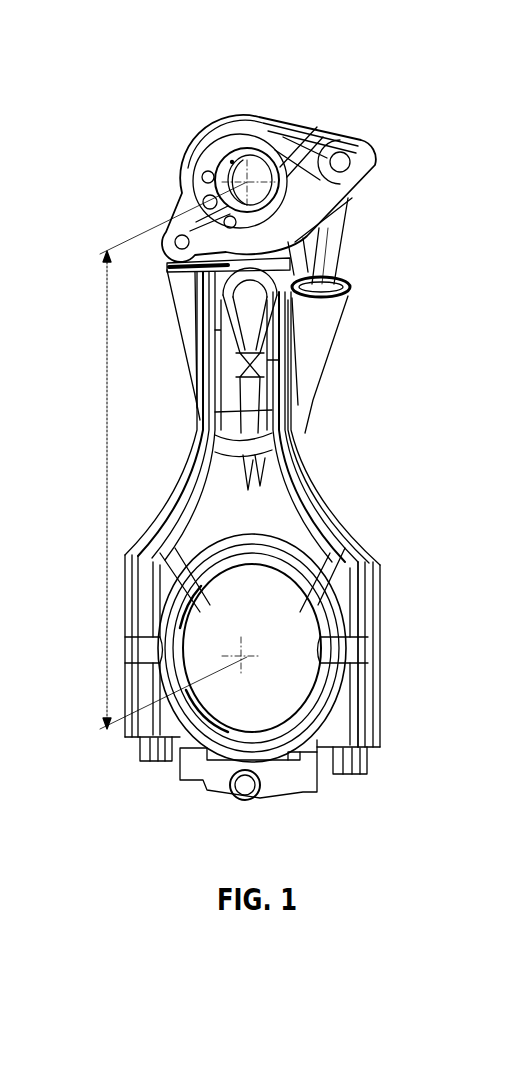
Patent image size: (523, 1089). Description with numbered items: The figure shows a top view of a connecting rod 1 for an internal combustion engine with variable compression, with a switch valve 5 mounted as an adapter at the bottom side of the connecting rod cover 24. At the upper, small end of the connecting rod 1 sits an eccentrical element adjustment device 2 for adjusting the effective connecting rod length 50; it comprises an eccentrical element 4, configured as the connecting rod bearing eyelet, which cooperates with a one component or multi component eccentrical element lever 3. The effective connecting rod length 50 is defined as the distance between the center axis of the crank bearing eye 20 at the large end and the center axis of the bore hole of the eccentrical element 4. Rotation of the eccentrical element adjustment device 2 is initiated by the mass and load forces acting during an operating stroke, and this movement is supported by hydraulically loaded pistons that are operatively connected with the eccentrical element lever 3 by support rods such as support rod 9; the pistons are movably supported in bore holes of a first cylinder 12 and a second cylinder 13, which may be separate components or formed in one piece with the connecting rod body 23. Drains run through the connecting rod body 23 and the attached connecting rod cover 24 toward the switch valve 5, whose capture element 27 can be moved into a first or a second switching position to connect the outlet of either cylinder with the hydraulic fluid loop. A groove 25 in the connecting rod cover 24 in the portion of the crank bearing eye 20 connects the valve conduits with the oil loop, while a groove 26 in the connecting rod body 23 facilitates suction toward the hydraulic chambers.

The connecting rod 1 is at (445, 0).
The eccentrical element adjustment device 2 is at (163, 137).
The eccentrical element lever 3 is at (309, 127).
The eccentrical element 4 is at (218, 150).
The switch valve 5 is at (210, 797).
The support rod 9 is at (328, 237).
The first cylinder 12 is at (183, 302).
The second cylinder 13 is at (324, 330).
The crank bearing eye 20 is at (296, 635).
The connecting rod body 23 is at (364, 592).
The connecting rod cover 24 is at (368, 710).
The groove 25 is at (228, 727).
The groove 26 is at (191, 602).
The capture element 27 is at (247, 789).
The effective connecting rod length 50 is at (100, 487).